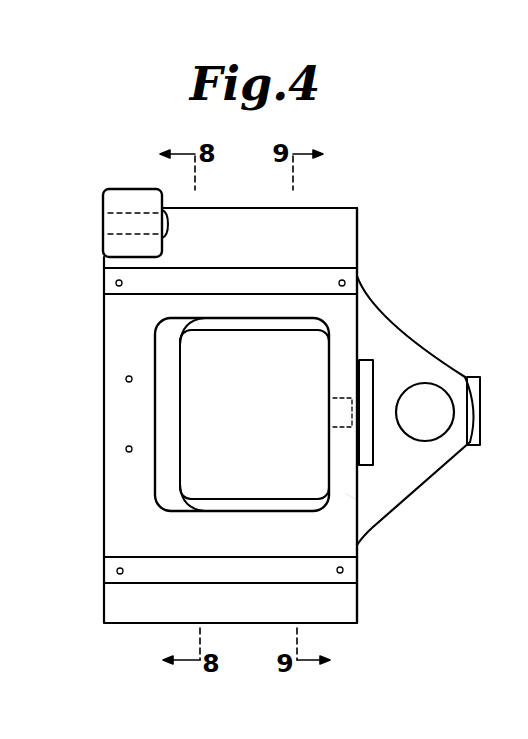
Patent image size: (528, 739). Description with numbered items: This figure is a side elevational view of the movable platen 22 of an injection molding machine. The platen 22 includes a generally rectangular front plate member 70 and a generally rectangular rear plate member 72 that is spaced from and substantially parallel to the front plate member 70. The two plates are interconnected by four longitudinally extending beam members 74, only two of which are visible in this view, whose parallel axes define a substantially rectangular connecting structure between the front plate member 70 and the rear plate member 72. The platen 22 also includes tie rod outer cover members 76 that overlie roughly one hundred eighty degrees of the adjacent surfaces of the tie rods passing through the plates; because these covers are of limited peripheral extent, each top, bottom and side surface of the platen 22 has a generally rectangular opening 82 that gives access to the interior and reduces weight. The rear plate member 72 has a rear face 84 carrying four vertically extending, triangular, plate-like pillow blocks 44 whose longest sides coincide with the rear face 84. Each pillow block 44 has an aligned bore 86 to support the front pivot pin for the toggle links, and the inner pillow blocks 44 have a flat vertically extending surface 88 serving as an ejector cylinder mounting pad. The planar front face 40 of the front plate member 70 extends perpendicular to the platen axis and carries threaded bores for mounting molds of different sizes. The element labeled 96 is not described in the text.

The movable platen 22 is at (235, 222).
The front face 40 is at (105, 459).
The pillow block 44 is at (410, 344).
The front plate member 70 is at (120, 342).
The rear plate member 72 is at (346, 493).
The beam member 74 is at (235, 322).
The tie rod outer cover member 76 is at (327, 218).
The rectangular opening 82 is at (325, 363).
The rear face 84 is at (358, 235).
The aligned bore 86 is at (428, 434).
The vertically extending surface 88 is at (481, 385).
The hinge block 96 is at (123, 198).